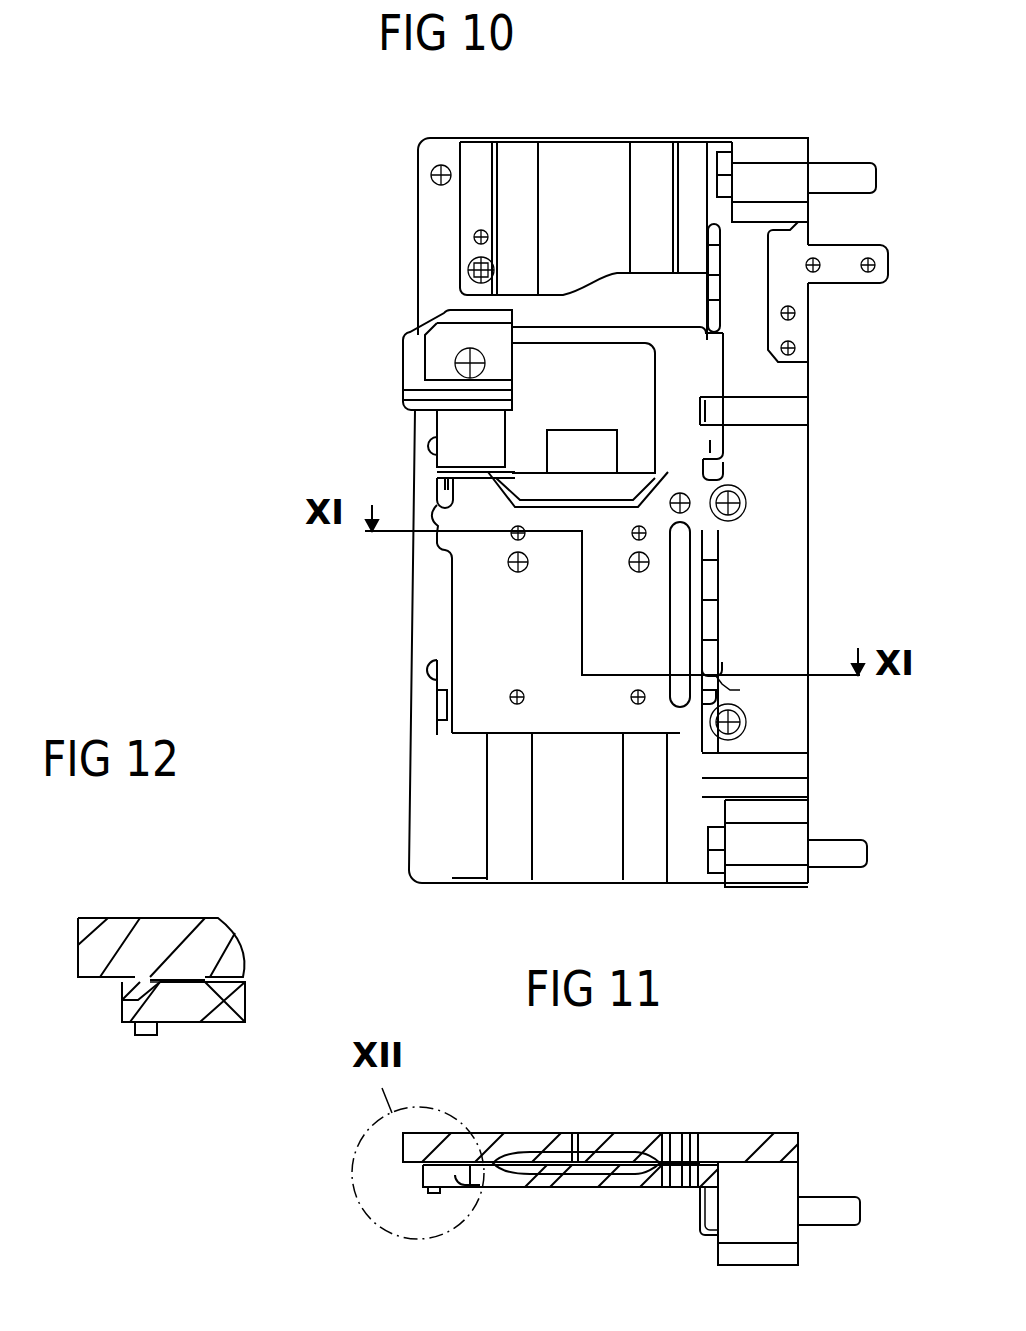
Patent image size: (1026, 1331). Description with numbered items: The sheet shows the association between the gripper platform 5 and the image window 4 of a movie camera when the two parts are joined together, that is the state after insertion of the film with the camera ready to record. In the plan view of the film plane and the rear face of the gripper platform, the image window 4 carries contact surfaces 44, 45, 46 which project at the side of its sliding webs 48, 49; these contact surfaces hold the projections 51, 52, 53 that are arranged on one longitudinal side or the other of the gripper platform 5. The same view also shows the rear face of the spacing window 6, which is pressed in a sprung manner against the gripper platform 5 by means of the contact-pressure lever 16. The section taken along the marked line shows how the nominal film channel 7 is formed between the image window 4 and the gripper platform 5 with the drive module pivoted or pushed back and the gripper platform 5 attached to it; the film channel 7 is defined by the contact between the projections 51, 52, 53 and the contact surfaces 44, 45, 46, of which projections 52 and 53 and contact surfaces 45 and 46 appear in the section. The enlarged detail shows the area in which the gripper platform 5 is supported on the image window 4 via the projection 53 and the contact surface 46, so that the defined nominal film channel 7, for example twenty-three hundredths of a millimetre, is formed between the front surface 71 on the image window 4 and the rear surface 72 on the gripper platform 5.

In FIG. 10, the image window 4 is at (785, 553).
In FIG. 12, the image window 4 is at (133, 929).
In FIG. 11, the image window 4 is at (775, 1140).
In FIG. 10, the gripper platform 5 is at (463, 625).
In FIG. 12, the gripper platform 5 is at (181, 1010).
In FIG. 11, the gripper platform 5 is at (775, 1187).
In FIG. 10, the spacing window 6 is at (632, 370).
In FIG. 12, the film channel 7 is at (250, 977).
In FIG. 11, the film channel 7 is at (557, 1160).
In FIG. 10, the contact-pressure lever 16 is at (447, 350).
In FIG. 10, the contact surface 44 is at (725, 453).
In FIG. 10, the contact surface 45 is at (722, 692).
In FIG. 11, the contact surface 45 is at (700, 1180).
In FIG. 10, the contact surface 46 is at (433, 546).
In FIG. 12, the contact surface 46 is at (135, 977).
In FIG. 10, the sliding web 48 is at (470, 790).
In FIG. 10, the sliding web 49 is at (680, 790).
In FIG. 10, the projection 51 is at (708, 435).
In FIG. 10, the projection 52 is at (723, 668).
In FIG. 11, the projection 52 is at (700, 1180).
In FIG. 10, the projection 53 is at (432, 517).
In FIG. 12, the projection 53 is at (125, 1005).
In FIG. 12, the front surface 71 is at (207, 977).
In FIG. 12, the rear surface 72 is at (228, 1015).